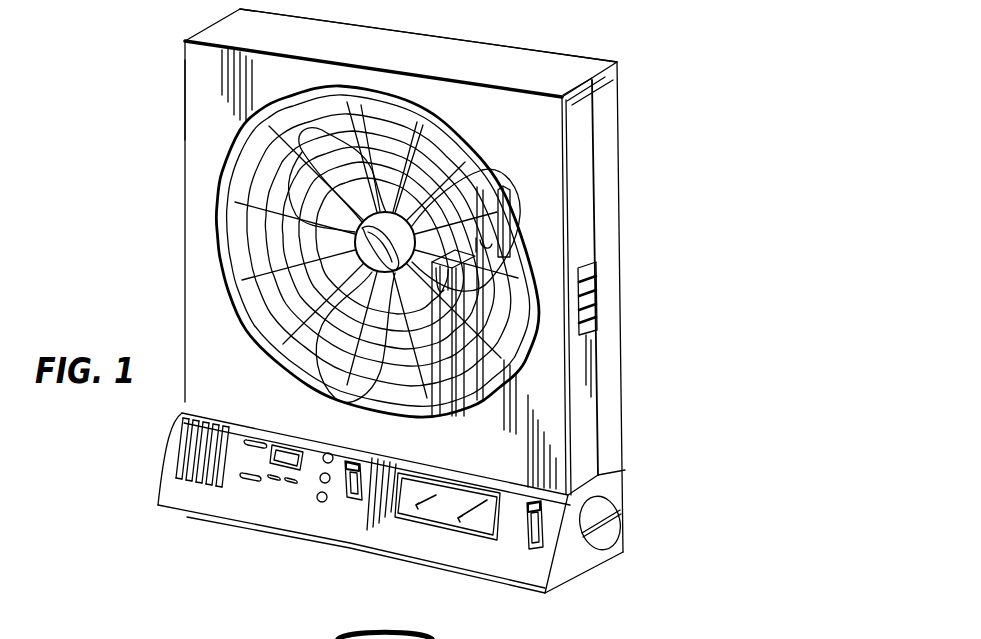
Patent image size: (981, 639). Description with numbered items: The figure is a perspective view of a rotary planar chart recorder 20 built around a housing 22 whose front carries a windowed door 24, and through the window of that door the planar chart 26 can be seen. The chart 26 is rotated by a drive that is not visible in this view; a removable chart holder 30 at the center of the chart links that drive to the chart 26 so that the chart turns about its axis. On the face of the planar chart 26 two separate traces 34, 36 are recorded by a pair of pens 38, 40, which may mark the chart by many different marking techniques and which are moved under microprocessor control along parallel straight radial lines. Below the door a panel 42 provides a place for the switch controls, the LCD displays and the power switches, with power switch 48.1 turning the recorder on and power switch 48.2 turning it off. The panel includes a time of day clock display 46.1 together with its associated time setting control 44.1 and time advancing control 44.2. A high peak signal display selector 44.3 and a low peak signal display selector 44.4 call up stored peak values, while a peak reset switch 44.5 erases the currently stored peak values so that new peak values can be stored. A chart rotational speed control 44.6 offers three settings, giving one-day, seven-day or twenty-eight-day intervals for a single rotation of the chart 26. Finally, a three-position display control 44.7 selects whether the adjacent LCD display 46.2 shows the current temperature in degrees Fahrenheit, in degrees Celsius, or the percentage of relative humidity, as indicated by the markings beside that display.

The rotary planar chart recorder 20 is at (631, 77).
The housing 22 is at (510, 44).
The windowed door 24 is at (200, 73).
The planar chart 26 is at (220, 183).
The removable chart holder 30 is at (470, 166).
The trace 34 is at (222, 237).
The trace 36 is at (224, 273).
The pen 38 is at (473, 278).
The pen 40 is at (505, 211).
The panel 42 is at (192, 520).
The time setting control 44.1 is at (250, 489).
The time advancing control 44.2 is at (275, 483).
The peak signal display selector (high) 44.3 is at (327, 452).
The peak signal display selector (low) 44.4 is at (327, 503).
The peak reset switch 44.5 is at (323, 484).
The chart rotational speed control 44.6 is at (360, 463).
The three-position display control 44.7 is at (545, 500).
The time of day clock display 46.1 is at (278, 446).
The LCD display 46.2 is at (466, 507).
The power switch (on) 48.1 is at (248, 441).
The power switch (off) 48.2 is at (232, 481).